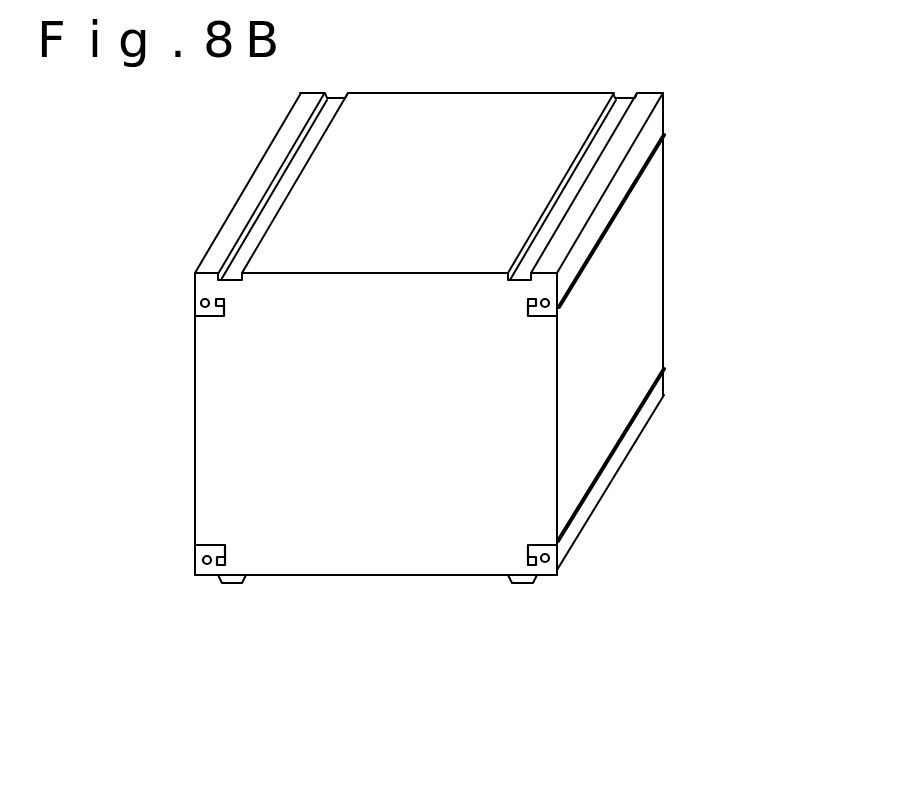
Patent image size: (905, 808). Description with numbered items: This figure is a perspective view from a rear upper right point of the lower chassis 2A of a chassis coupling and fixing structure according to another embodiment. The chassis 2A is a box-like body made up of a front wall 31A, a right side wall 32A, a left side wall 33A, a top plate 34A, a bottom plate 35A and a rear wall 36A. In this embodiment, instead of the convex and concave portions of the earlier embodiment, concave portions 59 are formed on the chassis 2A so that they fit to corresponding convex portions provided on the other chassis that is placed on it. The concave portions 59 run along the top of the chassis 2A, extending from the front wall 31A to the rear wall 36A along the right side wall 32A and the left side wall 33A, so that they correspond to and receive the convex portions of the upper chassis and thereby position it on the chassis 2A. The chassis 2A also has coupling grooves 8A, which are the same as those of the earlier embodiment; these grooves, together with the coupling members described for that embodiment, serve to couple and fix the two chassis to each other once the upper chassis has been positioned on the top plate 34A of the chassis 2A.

The chassis 2A is at (708, 246).
The coupling groove 8A is at (528, 316).
The front wall 31A is at (318, 553).
The right side wall 32A is at (645, 352).
The left side wall 33A is at (193, 458).
The top plate 34A is at (553, 112).
The bottom plate 35A is at (450, 575).
The rear wall 36A is at (452, 92).
The concave portion 59 is at (608, 123).